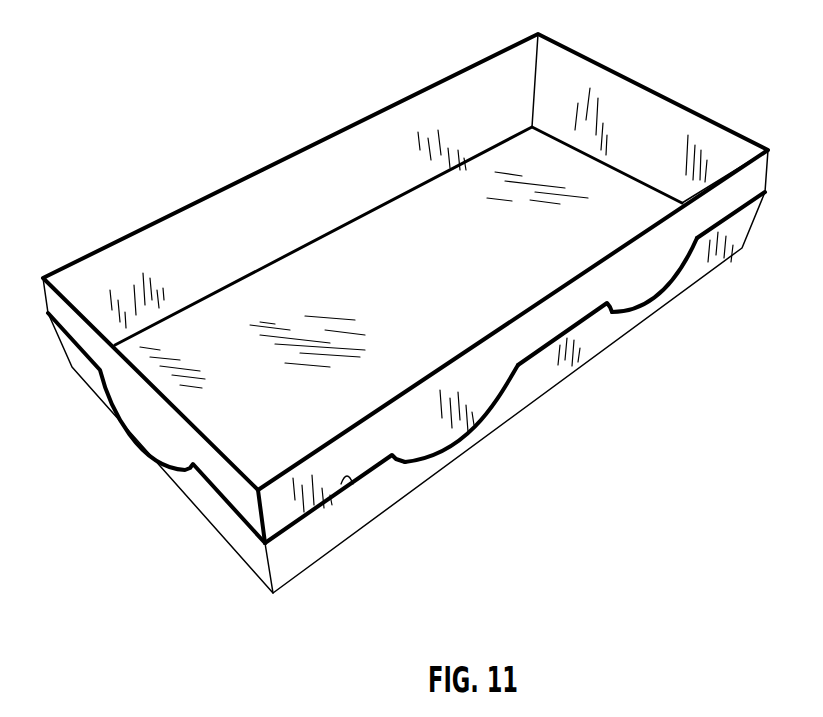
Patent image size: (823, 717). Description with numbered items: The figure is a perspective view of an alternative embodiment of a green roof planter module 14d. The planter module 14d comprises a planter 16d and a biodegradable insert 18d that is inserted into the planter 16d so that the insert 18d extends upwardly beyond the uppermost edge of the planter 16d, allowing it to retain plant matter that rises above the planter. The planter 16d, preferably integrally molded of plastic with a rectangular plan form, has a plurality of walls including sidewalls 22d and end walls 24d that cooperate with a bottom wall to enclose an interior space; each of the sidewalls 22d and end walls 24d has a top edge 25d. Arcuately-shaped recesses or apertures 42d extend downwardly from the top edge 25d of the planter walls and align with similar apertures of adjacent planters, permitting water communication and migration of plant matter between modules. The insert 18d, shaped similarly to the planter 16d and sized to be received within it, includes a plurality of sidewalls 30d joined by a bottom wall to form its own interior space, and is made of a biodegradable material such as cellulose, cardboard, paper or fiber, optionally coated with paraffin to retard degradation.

The planter module 14d is at (394, 313).
The insert 18d is at (394, 306).
The planter 16d is at (406, 392).
The sidewalls 22d is at (520, 387).
The arcuately-shaped recesses or apertures 42d is at (490, 413).
The sidewalls 30d is at (413, 428).
The top edge 25d is at (349, 482).
The end walls 24d is at (223, 523).